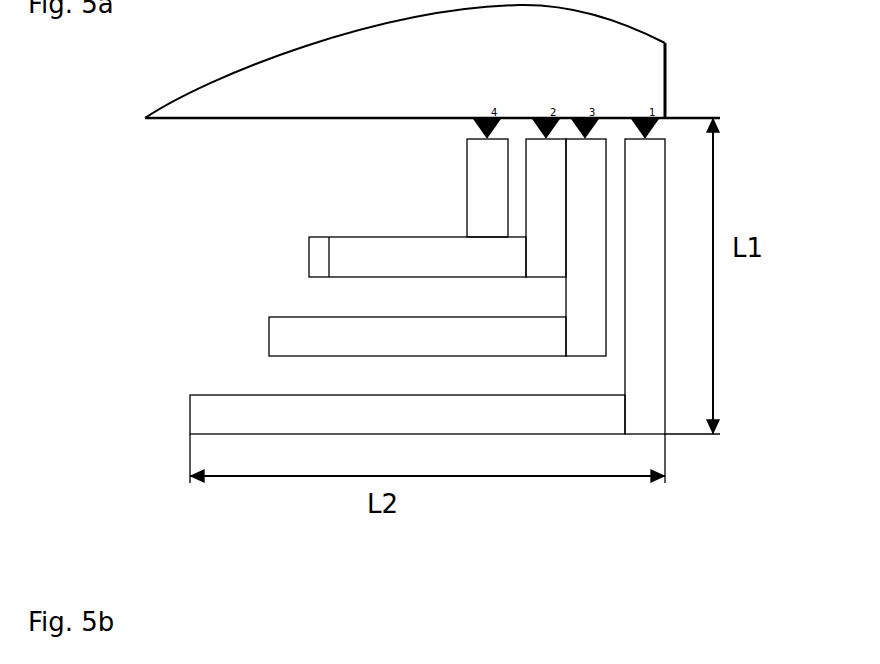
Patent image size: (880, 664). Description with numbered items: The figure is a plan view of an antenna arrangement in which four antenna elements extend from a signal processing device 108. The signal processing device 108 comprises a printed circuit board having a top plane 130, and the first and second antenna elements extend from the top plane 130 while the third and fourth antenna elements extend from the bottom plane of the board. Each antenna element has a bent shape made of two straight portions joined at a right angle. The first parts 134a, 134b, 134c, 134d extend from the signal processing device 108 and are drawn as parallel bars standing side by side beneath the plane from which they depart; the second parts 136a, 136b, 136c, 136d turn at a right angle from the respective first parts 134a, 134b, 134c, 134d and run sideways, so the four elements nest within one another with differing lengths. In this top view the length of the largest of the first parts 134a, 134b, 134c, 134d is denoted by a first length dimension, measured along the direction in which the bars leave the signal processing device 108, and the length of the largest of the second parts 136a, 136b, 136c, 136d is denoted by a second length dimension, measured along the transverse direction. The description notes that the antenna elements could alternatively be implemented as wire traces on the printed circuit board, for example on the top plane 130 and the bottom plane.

The signal processing device 108 is at (503, 75).
The top plane 130 is at (338, 90).
The first part of first antenna element 134a is at (548, 165).
The first part of second antenna element 134b is at (635, 363).
The first part of third antenna element 134c is at (480, 212).
The first part of fourth antenna element 134d is at (588, 299).
The second part of first antenna element 136a is at (355, 255).
The second part of second antenna element 136b is at (207, 421).
The second part of third antenna element 136c is at (317, 259).
The second part of fourth antenna element 136d is at (283, 337).